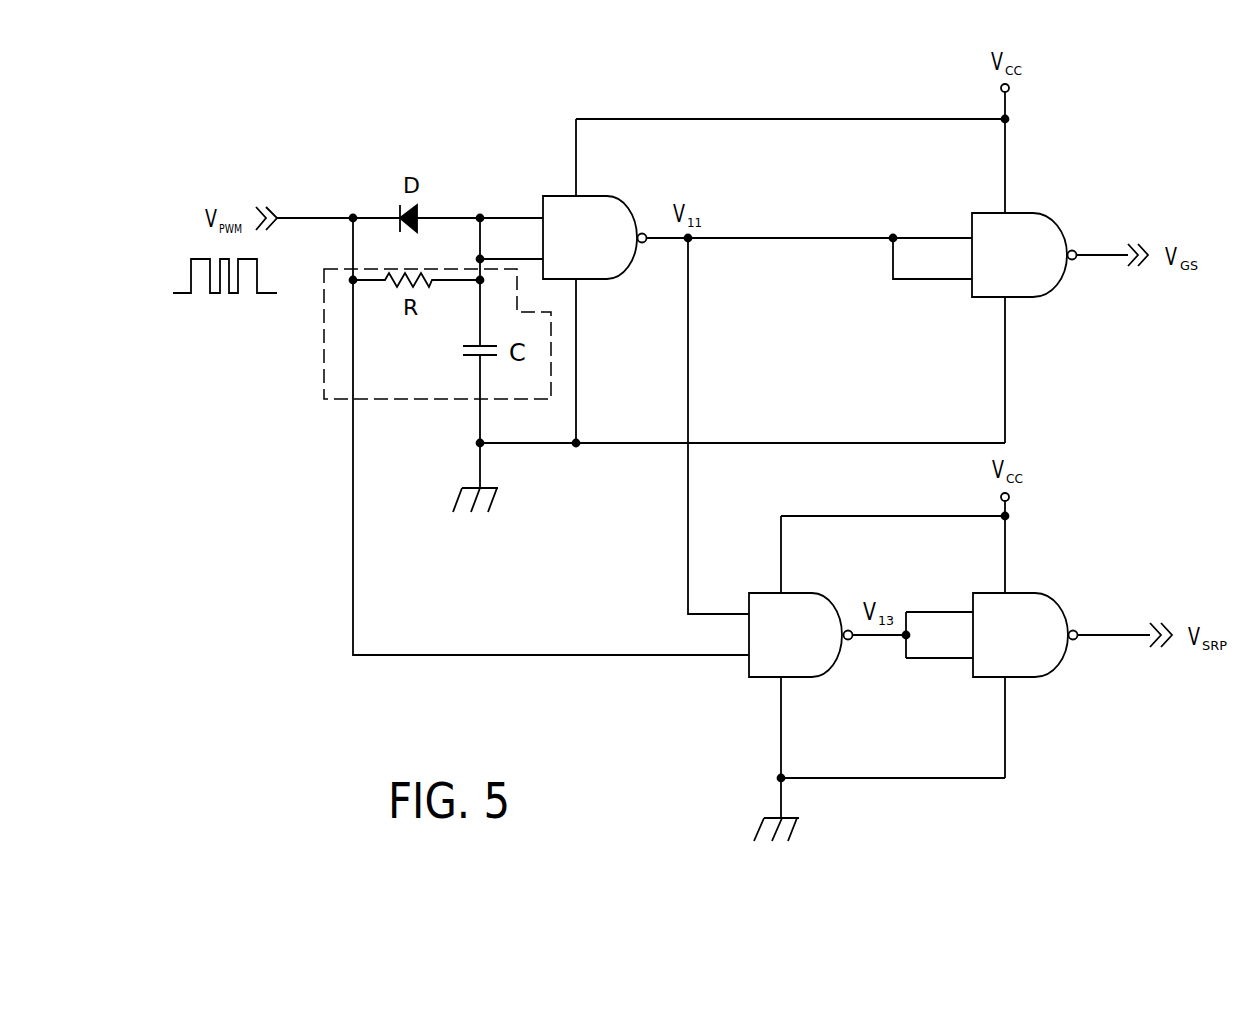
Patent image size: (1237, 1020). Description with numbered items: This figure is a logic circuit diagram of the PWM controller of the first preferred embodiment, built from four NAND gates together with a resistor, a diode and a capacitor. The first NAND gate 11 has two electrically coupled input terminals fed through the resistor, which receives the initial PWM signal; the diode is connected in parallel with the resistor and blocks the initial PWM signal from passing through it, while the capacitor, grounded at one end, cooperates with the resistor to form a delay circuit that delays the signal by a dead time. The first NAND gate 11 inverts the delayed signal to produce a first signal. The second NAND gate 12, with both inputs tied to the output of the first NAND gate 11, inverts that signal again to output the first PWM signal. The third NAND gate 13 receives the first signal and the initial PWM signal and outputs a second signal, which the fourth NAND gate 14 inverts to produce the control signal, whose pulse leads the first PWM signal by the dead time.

The first NAND gate 11 is at (627, 203).
The second NAND gate 12 is at (1053, 218).
The third NAND gate 13 is at (830, 598).
The fourth NAND gate 14 is at (1055, 598).